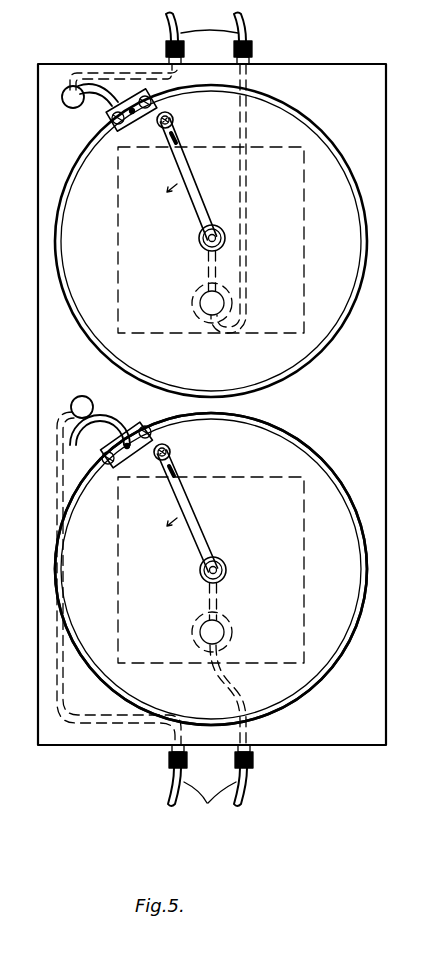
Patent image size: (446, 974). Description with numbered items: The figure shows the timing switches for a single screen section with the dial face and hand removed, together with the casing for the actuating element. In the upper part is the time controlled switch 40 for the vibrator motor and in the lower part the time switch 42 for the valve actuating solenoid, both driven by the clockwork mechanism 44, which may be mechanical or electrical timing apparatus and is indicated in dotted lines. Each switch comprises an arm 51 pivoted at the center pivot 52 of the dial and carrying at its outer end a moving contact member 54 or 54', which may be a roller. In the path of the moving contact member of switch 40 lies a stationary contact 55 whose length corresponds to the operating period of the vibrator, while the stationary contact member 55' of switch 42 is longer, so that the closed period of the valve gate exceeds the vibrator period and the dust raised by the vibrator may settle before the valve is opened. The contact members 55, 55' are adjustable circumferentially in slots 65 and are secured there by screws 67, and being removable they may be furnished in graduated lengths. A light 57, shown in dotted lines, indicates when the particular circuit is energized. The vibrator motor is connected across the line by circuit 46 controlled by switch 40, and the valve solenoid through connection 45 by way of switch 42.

The time controlled switch 40 is at (333, 117).
The time switch 42 is at (333, 452).
The clockwork mechanism 44 is at (305, 601).
The connection 45 is at (210, 789).
The circuit 46 is at (248, 33).
The arm 51 is at (198, 188).
The pivot 52 is at (222, 232).
The contact member 54 is at (186, 116).
The contact member 54' is at (192, 447).
The stationary contact 55 is at (131, 137).
The stationary contact member 55' is at (129, 474).
The light 57 is at (197, 293).
The slots 65 is at (86, 158).
The screws 67 is at (106, 118).